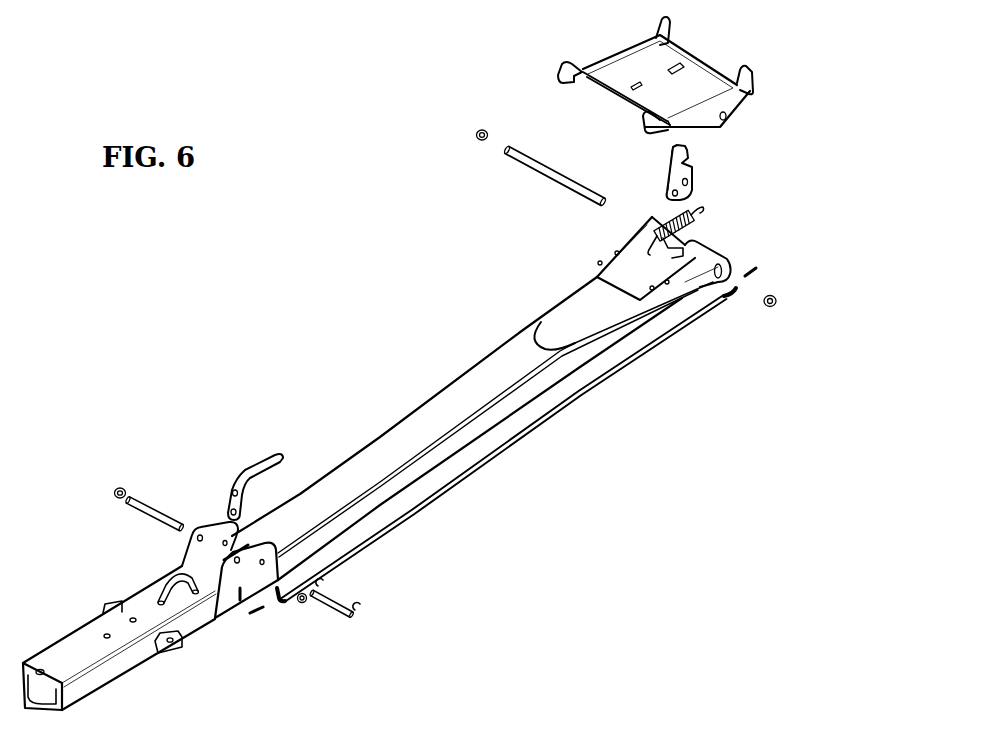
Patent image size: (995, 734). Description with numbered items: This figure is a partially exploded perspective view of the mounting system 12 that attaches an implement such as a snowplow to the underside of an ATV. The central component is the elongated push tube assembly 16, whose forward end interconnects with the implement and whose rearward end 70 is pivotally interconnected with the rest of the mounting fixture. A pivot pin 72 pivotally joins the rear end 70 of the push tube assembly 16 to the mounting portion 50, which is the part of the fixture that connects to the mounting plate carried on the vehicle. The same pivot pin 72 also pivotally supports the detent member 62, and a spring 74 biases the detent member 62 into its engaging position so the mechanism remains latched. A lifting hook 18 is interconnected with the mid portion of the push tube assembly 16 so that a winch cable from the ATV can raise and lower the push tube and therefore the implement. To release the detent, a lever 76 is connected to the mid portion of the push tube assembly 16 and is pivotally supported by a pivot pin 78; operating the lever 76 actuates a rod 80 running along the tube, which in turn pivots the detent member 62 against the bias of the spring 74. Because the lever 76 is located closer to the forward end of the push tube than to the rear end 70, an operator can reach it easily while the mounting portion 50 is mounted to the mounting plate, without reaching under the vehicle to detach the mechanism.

The mounting system 12 is at (838, 281).
The push tube assembly 16 is at (405, 415).
The lifting hook 18 is at (158, 593).
The mounting portion 50 is at (747, 111).
The detent member 62 is at (691, 172).
The rearward end 70 is at (726, 243).
The pivot pin 72 is at (545, 177).
The spring 74 is at (697, 226).
The lever 76 is at (260, 462).
The pivot pin 78 is at (332, 600).
The rod 80 is at (497, 458).